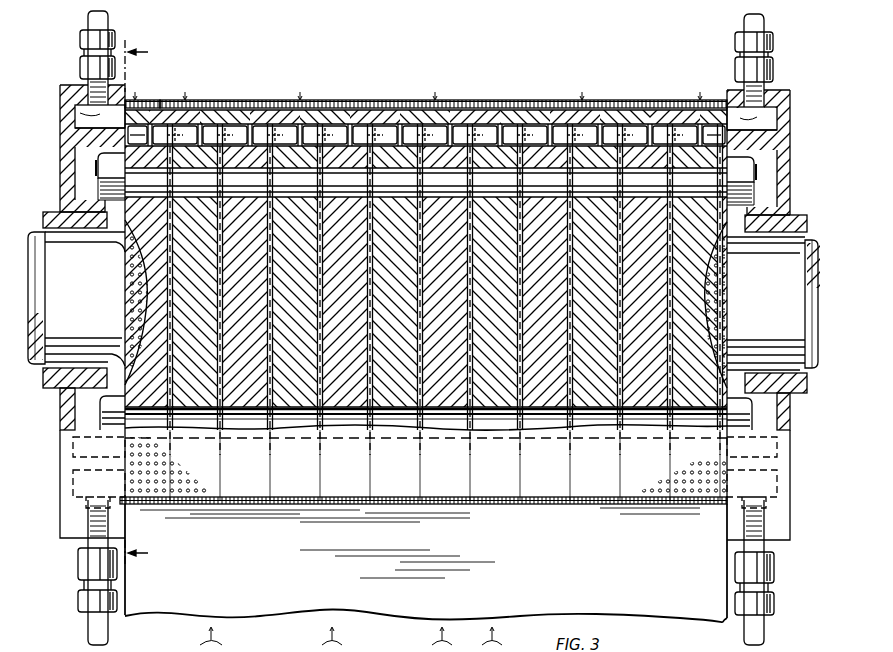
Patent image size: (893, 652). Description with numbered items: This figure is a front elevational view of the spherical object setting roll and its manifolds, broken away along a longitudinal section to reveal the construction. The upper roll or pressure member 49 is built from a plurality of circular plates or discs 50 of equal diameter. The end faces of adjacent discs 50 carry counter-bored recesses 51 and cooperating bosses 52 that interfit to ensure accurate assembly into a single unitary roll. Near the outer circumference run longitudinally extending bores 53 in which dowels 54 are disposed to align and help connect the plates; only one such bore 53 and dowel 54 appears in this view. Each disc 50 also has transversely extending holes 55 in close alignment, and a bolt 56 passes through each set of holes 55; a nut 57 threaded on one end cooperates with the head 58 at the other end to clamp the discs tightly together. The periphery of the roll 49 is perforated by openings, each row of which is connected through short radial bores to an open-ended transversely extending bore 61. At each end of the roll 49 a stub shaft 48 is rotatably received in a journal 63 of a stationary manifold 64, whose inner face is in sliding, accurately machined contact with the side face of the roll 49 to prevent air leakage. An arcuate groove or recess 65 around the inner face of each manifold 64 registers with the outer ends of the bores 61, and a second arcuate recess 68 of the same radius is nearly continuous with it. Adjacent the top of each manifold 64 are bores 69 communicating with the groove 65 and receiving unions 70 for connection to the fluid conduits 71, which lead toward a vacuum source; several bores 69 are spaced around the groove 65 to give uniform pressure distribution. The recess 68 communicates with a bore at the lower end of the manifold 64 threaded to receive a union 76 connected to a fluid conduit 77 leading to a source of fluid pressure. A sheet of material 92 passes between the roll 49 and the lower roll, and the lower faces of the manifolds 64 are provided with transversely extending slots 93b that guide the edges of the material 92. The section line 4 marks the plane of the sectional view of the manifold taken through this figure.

The section line 4- 4 is at (142, 302).
The stub shaft 48 is at (35, 215).
The roll 49 is at (468, 103).
The circular plates or discs 50 is at (426, 110).
The counter-bored recesses 51 is at (128, 250).
The bosses 52 is at (172, 290).
The longitudinally extending bores 53 is at (156, 108).
The dowels 54 is at (340, 128).
The transversely extending holes 55 is at (745, 209).
The bolt 56 is at (100, 165).
The nut 57 is at (102, 196).
The head 58 is at (750, 178).
The transversely extending bore 61 is at (528, 108).
The journal 63 is at (786, 213).
The stationary manifold 64 is at (50, 128).
The arcuate groove or recess 65 is at (78, 105).
The recess 68 is at (766, 493).
The bores 69 is at (351, 639).
The unions 70 is at (770, 80).
The fluid conduits 71 is at (108, 24).
The union 76 is at (78, 563).
The fluid conduit 77 is at (88, 620).
The sheet of material 92 is at (612, 506).
The transversely extending slots 93b is at (727, 506).